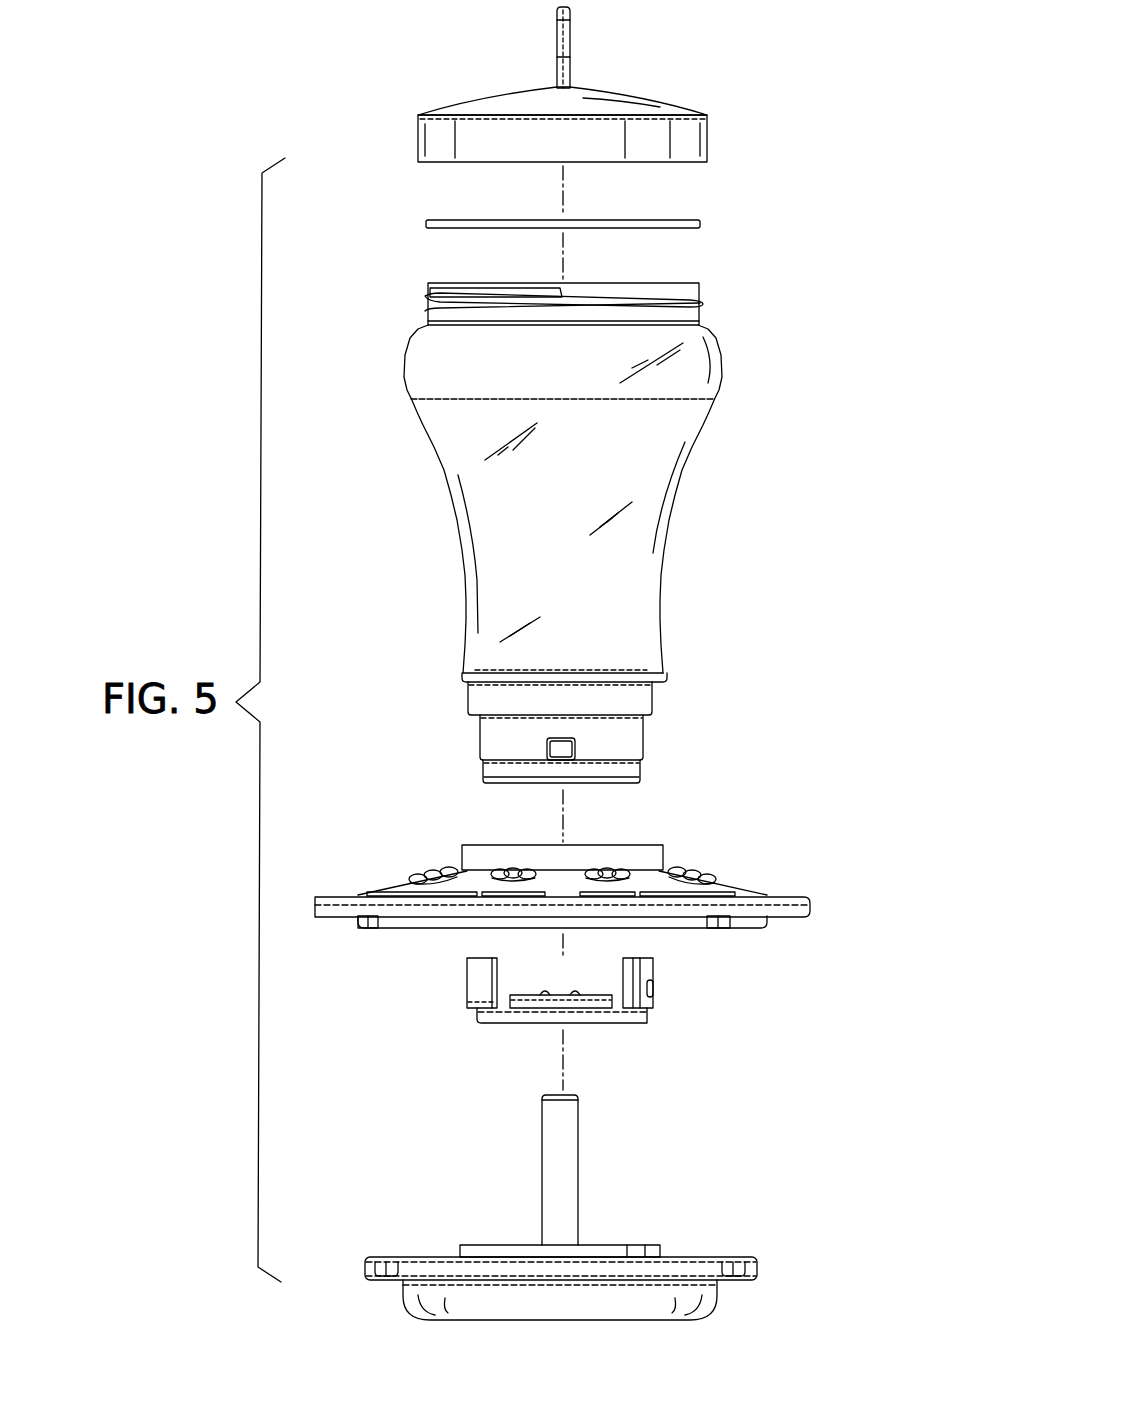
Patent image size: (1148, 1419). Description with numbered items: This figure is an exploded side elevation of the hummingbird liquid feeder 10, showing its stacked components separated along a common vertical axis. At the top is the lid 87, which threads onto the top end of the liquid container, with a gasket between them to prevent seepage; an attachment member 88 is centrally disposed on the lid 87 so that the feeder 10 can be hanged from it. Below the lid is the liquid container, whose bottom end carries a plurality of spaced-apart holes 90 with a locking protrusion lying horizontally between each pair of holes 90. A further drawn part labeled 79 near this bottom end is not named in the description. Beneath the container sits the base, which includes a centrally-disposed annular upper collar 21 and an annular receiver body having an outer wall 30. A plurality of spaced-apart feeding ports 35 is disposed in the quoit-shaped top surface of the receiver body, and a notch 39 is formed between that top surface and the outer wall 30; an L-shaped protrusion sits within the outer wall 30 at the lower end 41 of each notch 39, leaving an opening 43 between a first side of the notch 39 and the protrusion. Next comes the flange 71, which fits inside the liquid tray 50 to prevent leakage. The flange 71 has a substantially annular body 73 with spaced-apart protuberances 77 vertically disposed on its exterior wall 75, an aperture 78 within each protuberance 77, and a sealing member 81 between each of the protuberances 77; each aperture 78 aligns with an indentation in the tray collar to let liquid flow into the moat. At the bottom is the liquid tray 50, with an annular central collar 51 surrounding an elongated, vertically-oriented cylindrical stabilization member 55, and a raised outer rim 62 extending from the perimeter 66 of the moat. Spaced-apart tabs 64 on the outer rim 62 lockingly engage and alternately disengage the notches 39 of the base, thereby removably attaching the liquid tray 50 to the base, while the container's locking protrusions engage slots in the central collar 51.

The hummingbird liquid feeder 10 is at (657, 628).
The annular upper collar 21 is at (593, 831).
The outer wall 30 is at (593, 943).
The feeding ports 35 is at (728, 851).
The notch 39 is at (410, 834).
The lower end 41 is at (553, 871).
The opening 43 is at (551, 832).
The liquid tray 50 is at (598, 1307).
The annular central collar 51 is at (576, 1228).
The stabilization member 55 is at (601, 1170).
The raised outer rim 62 is at (392, 1230).
The tabs 64 is at (597, 1274).
The perimeter 66 is at (770, 1245).
The flange 71 is at (599, 999).
The annular body 73 is at (595, 1035).
The exterior wall 75 is at (550, 1046).
The protuberances 77 is at (674, 971).
The aperture 78 is at (713, 984).
The bottle neck collar 79 is at (596, 749).
The sealing member 81 is at (562, 1057).
The lid 87 is at (590, 110).
The attachment member 88 is at (592, 44).
The holes 90 is at (645, 713).